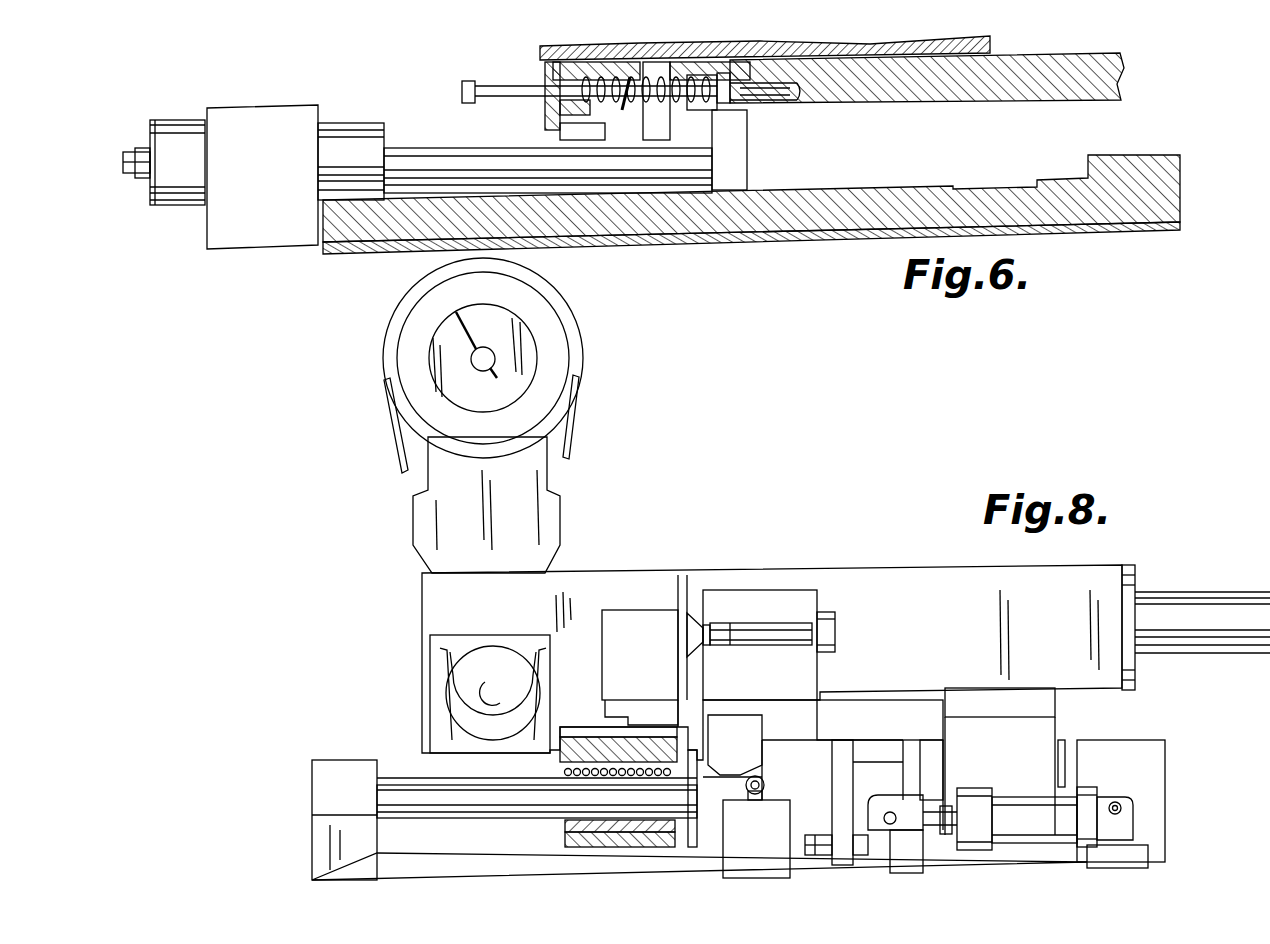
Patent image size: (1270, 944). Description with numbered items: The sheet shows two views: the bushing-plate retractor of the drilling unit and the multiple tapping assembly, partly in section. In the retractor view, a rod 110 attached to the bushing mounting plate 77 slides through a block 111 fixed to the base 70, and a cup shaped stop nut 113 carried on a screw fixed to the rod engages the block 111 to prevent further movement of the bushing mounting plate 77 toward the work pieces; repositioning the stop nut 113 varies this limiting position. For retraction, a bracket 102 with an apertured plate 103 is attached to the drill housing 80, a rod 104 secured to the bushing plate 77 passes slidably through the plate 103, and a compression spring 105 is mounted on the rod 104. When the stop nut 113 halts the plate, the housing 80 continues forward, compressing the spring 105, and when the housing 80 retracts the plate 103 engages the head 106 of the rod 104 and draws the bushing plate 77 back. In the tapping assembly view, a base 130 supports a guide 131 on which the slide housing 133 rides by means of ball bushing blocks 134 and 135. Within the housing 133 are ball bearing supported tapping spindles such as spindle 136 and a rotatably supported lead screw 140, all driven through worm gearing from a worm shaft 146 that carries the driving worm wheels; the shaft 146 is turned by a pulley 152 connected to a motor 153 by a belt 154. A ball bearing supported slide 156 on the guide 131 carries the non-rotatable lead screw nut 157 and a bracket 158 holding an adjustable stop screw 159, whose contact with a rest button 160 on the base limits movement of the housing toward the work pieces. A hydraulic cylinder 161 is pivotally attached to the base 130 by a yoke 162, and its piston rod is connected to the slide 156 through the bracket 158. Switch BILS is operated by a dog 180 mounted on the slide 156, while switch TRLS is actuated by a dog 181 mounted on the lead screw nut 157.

In FIG. 6, the base 70 is at (1030, 212).
In FIG. 6, the bushing mounting plate 77 is at (1050, 44).
In FIG. 6, the drill housing 80 is at (560, 46).
In FIG. 6, the bracket 102 is at (626, 102).
In FIG. 6, the apertured plate 103 is at (545, 110).
In FIG. 6, the rod 104 is at (490, 84).
In FIG. 6, the compression spring 105 is at (682, 108).
In FIG. 6, the head 106 is at (460, 85).
In FIG. 6, the rod 110 is at (400, 147).
In FIG. 6, the block 111 is at (278, 130).
In FIG. 6, the cup shaped stop nut 113 is at (186, 97).
In FIG. 8, the base 130 is at (405, 860).
In FIG. 8, the case shaft or guide 131 is at (405, 795).
In FIG. 8, the tapping spindle assembly slide housing 133 is at (938, 552).
In FIG. 8, the ball bushing block 134 is at (575, 840).
In FIG. 8, the ball bushing block 135 is at (1035, 735).
In FIG. 8, the tapping spindle 136 is at (1185, 603).
In FIG. 8, the lead screw 140 is at (825, 622).
In FIG. 8, the worm shaft 146 is at (483, 690).
In FIG. 8, the pulley 152 is at (512, 670).
In FIG. 8, the motor 153 is at (548, 385).
In FIG. 8, the belt 154 is at (572, 390).
In FIG. 8, the ball bearing supported slide 156 is at (880, 698).
In FIG. 8, the lead screw nut 157 is at (800, 605).
In FIG. 8, the bracket 158 is at (842, 810).
In FIG. 8, the adjustable stop screw 159 is at (810, 842).
In FIG. 8, the rest button 160 is at (915, 850).
In FIG. 8, the hydraulic cylinder 161 is at (1000, 800).
In FIG. 8, the yoke 162 is at (1115, 835).
In FIG. 8, the dog 180 is at (735, 720).
In FIG. 8, the dog 181 is at (745, 630).
In FIG. 8, the switch TRLS is at (623, 612).
In FIG. 8, the switch BILS is at (765, 805).